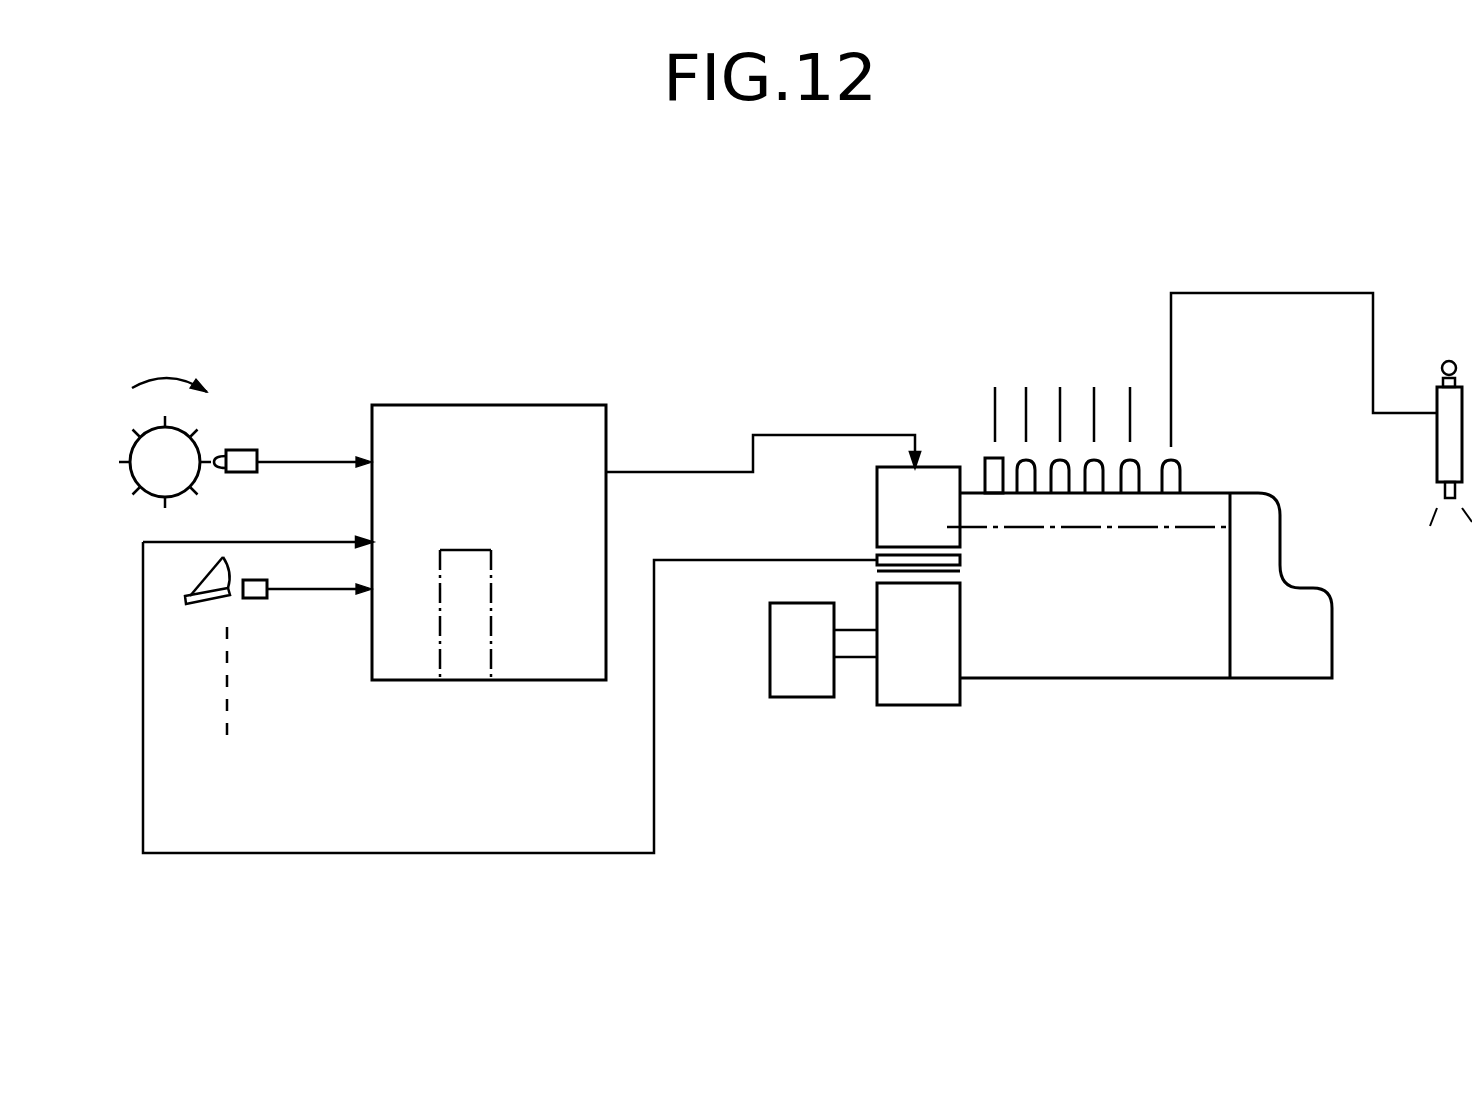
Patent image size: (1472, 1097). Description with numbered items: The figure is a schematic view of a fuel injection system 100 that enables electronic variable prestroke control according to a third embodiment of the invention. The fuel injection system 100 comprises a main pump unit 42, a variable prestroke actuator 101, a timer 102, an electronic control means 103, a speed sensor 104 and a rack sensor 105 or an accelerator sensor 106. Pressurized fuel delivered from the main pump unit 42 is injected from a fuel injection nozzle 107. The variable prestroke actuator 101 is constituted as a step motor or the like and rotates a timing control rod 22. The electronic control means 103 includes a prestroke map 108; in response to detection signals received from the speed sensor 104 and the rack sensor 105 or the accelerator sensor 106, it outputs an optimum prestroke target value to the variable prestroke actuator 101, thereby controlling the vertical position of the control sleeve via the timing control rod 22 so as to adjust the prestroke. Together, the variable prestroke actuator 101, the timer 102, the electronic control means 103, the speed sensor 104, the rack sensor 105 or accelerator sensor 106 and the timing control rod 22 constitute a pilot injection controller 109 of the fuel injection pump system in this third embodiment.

The fuel injection system 100 is at (785, 286).
The variable prestroke actuator 101 is at (877, 495).
The timer 102 is at (808, 697).
The electronic control means 103 is at (467, 405).
The speed sensor 104 is at (247, 450).
The rack sensor 105 is at (877, 571).
The accelerator sensor 106 is at (257, 598).
The fuel injection nozzle 107 is at (1435, 460).
The prestroke map 108 is at (462, 550).
The pilot injection controller 109 is at (582, 383).
The timing control rod 22 is at (1087, 527).
The main pump unit 42 is at (1155, 678).